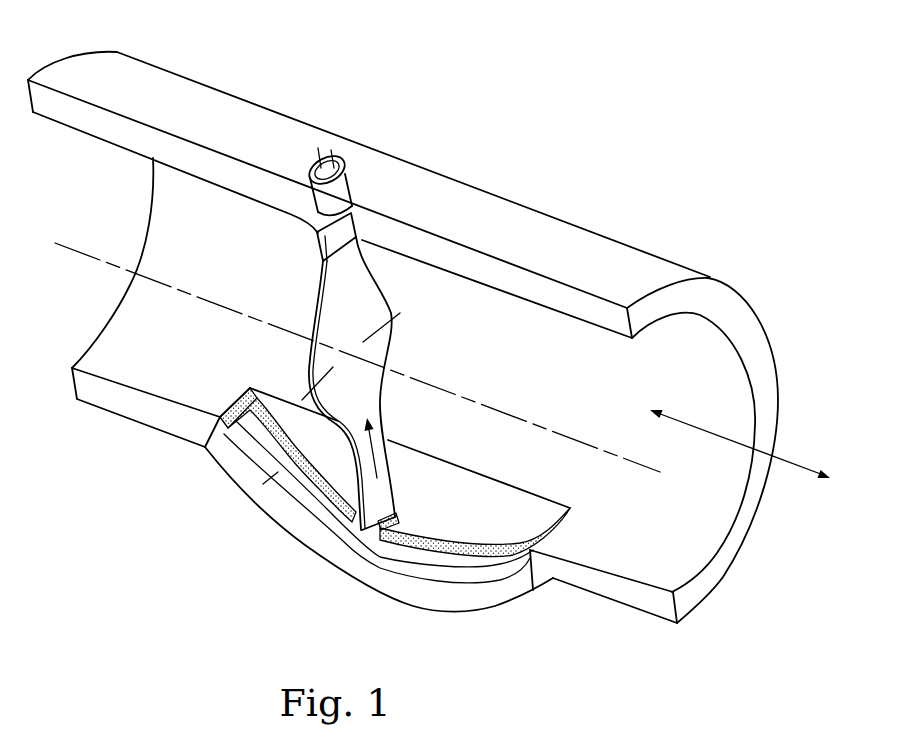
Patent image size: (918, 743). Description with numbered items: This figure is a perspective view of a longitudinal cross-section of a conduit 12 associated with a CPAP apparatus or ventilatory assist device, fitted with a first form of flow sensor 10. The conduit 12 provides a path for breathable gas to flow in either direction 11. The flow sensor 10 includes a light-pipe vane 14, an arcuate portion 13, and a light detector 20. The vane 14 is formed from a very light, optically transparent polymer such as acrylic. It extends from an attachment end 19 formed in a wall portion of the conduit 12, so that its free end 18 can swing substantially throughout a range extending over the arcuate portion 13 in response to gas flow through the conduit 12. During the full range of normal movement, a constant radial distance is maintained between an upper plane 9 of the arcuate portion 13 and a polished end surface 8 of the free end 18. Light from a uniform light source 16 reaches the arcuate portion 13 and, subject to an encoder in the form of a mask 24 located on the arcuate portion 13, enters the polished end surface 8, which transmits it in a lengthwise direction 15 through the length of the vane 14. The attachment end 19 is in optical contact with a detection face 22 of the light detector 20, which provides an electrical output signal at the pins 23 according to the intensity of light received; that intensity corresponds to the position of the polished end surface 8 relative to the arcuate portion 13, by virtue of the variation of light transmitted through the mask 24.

The polished end surface 8 is at (398, 525).
The upper plane 9 is at (236, 404).
The flow sensor 10 is at (523, 97).
The flow direction 11 is at (797, 462).
The conduit 12 is at (604, 246).
The arcuate portion 13 is at (275, 548).
The light-pipe vane 14 is at (397, 341).
The lengthwise direction 15 is at (377, 452).
The uniform light source 16 is at (382, 570).
The free end 18 is at (392, 480).
The attachment end 19 is at (318, 236).
The light detector 20 is at (348, 175).
The detection face 22 is at (355, 210).
The pins 23 is at (320, 138).
The mask 24 is at (463, 548).